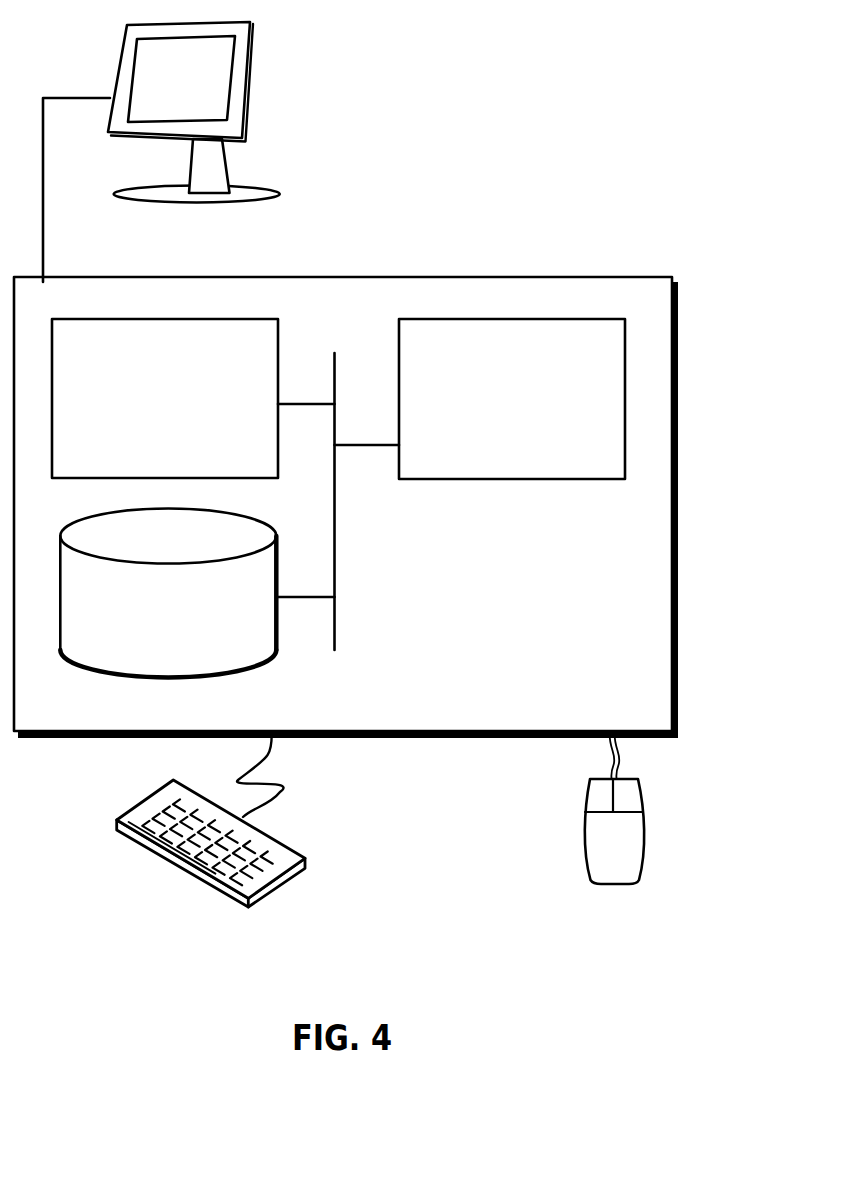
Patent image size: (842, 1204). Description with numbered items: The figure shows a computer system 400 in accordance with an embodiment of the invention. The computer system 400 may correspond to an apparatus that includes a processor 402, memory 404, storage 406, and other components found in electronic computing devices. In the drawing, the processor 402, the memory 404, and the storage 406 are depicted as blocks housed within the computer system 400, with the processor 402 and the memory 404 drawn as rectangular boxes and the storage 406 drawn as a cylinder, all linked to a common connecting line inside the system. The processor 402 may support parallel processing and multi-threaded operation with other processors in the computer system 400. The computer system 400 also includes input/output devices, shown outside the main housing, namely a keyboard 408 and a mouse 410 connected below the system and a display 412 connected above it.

The computer system 400 is at (388, 257).
The processor 402 is at (538, 411).
The memory 404 is at (188, 409).
The storage 406 is at (195, 623).
The keyboard 408 is at (137, 845).
The mouse 410 is at (636, 854).
The display 412 is at (161, 152).